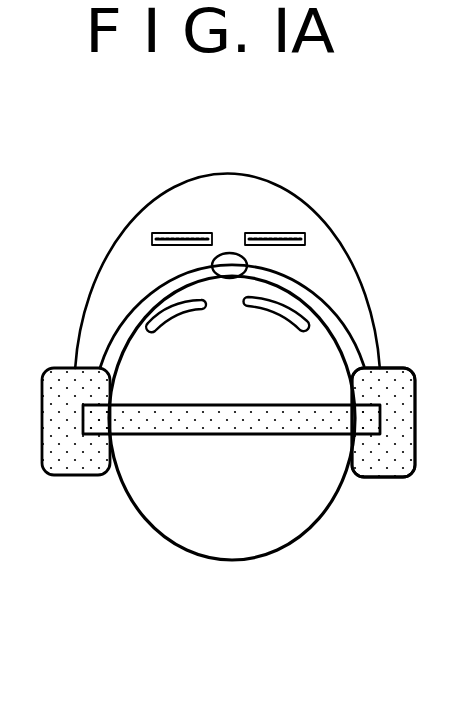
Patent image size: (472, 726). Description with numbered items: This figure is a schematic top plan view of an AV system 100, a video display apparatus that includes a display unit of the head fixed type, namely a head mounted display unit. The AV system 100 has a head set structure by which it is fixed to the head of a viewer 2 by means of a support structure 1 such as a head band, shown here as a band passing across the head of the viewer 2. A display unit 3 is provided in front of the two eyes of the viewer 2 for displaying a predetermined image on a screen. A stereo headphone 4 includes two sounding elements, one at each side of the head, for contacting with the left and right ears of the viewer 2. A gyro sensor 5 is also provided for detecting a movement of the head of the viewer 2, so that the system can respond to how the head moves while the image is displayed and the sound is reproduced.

The AV system 100 is at (357, 239).
The support structure 1 is at (307, 436).
The viewer 2 is at (153, 508).
The display unit 3 is at (263, 232).
The stereo headphone 4 is at (56, 367).
The gyro sensor 5 is at (395, 478).